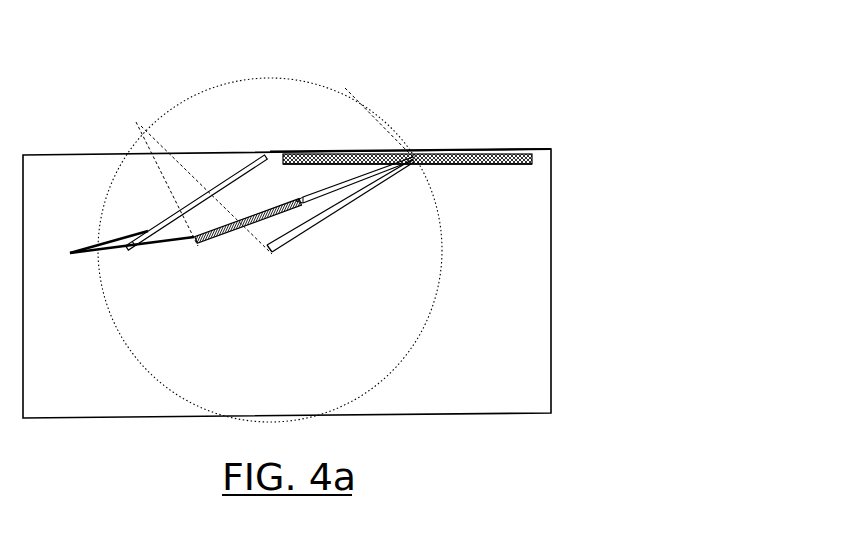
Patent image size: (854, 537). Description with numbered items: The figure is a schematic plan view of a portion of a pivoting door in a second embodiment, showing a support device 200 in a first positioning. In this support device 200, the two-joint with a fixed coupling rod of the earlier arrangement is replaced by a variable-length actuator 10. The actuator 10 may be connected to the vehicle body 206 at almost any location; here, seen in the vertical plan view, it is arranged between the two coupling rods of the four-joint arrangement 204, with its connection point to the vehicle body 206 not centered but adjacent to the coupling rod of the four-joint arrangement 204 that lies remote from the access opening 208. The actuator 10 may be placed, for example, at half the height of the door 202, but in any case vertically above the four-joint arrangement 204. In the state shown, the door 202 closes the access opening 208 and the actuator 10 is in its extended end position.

The variable-length actuator 10 is at (262, 217).
The support device 200 is at (502, 134).
The door 202 is at (386, 153).
The four-joint arrangement 204 is at (148, 216).
The vehicle body 206 is at (457, 362).
The access opening 208 is at (498, 164).